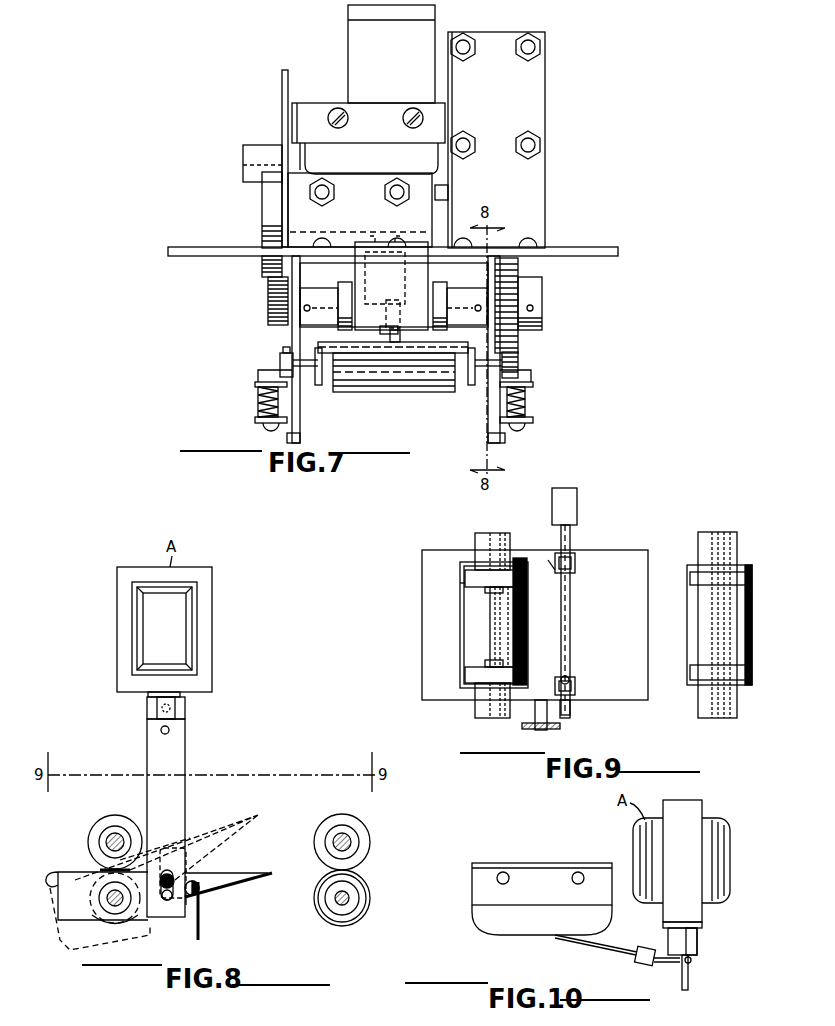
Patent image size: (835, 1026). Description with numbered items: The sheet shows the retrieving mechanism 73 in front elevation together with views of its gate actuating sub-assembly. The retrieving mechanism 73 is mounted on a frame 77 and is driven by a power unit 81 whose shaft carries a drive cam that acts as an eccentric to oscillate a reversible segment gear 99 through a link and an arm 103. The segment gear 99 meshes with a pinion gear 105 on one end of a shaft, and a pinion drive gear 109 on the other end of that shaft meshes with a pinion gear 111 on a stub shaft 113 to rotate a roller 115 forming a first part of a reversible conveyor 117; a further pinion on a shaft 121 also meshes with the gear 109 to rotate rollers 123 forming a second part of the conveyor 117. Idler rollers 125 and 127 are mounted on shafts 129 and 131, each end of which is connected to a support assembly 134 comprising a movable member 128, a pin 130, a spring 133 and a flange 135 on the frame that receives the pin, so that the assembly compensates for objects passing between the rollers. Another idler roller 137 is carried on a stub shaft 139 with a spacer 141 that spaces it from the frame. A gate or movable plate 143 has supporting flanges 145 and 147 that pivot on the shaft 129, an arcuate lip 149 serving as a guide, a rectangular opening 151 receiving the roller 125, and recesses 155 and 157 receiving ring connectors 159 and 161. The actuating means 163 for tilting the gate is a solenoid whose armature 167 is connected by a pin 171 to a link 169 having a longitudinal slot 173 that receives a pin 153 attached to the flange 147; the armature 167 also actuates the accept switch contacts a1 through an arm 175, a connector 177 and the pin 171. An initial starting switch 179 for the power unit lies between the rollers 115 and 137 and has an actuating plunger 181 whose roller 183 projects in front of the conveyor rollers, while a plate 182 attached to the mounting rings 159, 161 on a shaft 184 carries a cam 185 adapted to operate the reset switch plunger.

In FIG. 7, the retrieving mechanism 73 is at (347, 46).
In FIG. 7, the frame 77 is at (180, 235).
In FIG. 7, the power means or unit 81 is at (432, 32).
In FIG. 7, the reversible segment gear 99 is at (262, 222).
In FIG. 7, the arm 103 is at (282, 78).
In FIG. 7, the pinion gear 105 is at (268, 303).
In FIG. 7, the pinion drive gear 109 is at (518, 352).
In FIG. 7, the pinion gear 111 is at (522, 298).
In FIG. 8, the stub shaft 113 is at (118, 835).
In FIG. 9, the stub shaft 113 is at (485, 663).
In FIG. 7, the roller 115 is at (438, 284).
In FIG. 8, the roller 115 is at (106, 815).
In FIG. 9, the roller 115 is at (465, 675).
In FIG. 8, the reversible conveyor 117 is at (80, 860).
In FIG. 9, the reversible conveyor 117 is at (440, 588).
In FIG. 8, the shaft 121 is at (350, 838).
In FIG. 9, the shaft 121 is at (710, 633).
In FIG. 8, the rollers 123 is at (342, 814).
In FIG. 9, the rollers 123 is at (698, 562).
In FIG. 7, the idler roller 125 is at (436, 380).
In FIG. 8, the idler roller 125 is at (128, 921).
In FIG. 9, the idler roller 125 is at (475, 622).
In FIG. 8, the idler roller 127 is at (316, 906).
In FIG. 9, the idler roller 127 is at (692, 612).
In FIG. 7, the movable member 128 is at (256, 382).
In FIG. 7, the shaft 129 is at (283, 358).
In FIG. 8, the shaft 129 is at (113, 905).
In FIG. 7, the pin 130 is at (258, 396).
In FIG. 8, the shaft 131 is at (335, 895).
In FIG. 7, the spring 133 is at (258, 408).
In FIG. 7, the support assembly 134 is at (245, 384).
In FIG. 7, the flange 135 is at (262, 423).
In FIG. 7, the idler roller 137 is at (340, 290).
In FIG. 9, the idler roller 137 is at (518, 558).
In FIG. 9, the stub shaft 139 is at (485, 592).
In FIG. 7, the spacer 141 is at (330, 278).
In FIG. 9, the spacer 141 is at (478, 558).
In FIG. 7, the gate or movable plate 143 is at (320, 342).
In FIG. 8, the gate or movable plate 143 is at (258, 813).
In FIG. 9, the gate or movable plate 143 is at (626, 550).
In FIG. 7, the supporting flange 145 is at (318, 386).
In FIG. 7, the supporting flange 147 is at (471, 386).
In FIG. 8, the supporting flange 147 is at (58, 905).
In FIG. 7, the guide or arcuate lip 149 is at (362, 350).
In FIG. 8, the guide or arcuate lip 149 is at (58, 872).
In FIG. 9, the guide or arcuate lip 149 is at (420, 598).
In FIG. 9, the rectangular opening 151 is at (526, 631).
In FIG. 8, the pin 153 is at (170, 905).
In FIG. 9, the pin 153 is at (535, 712).
In FIG. 9, the opening or recess 155 is at (576, 684).
In FIG. 9, the opening or recess 157 is at (576, 566).
In FIG. 8, the ring connector 159 is at (190, 910).
In FIG. 9, the ring connector 159 is at (572, 675).
In FIG. 9, the ring connector 161 is at (548, 575).
In FIG. 8, the actuating means 163 is at (141, 560).
In FIG. 10, the actuating means 163 is at (632, 841).
In FIG. 8, the armature 167 is at (182, 710).
In FIG. 10, the armature 167 is at (698, 944).
In FIG. 8, the link 169 is at (185, 752).
In FIG. 9, the link 169 is at (560, 728).
In FIG. 10, the link 169 is at (690, 985).
In FIG. 8, the pin 171 is at (170, 730).
In FIG. 10, the pin 171 is at (692, 960).
In FIG. 8, the longitudinal slot 173 is at (200, 866).
In FIG. 7, the arm 175 is at (441, 190).
In FIG. 10, the arm 175 is at (585, 945).
In FIG. 10, the connector 177 is at (640, 963).
In FIG. 7, the initial starting switch 179 is at (305, 193).
In FIG. 7, the actuating plunger 181 is at (388, 260).
In FIG. 8, the plate 182 is at (203, 926).
In FIG. 9, the plate 182 is at (572, 615).
In FIG. 7, the roller 183 is at (410, 340).
In FIG. 8, the shaft 184 is at (200, 895).
In FIG. 9, the shaft 184 is at (572, 712).
In FIG. 9, the cam 185 is at (577, 507).
In FIG. 7, the accept switch contacts a1 is at (325, 118).
In FIG. 10, the accept switch contacts a1 is at (528, 878).